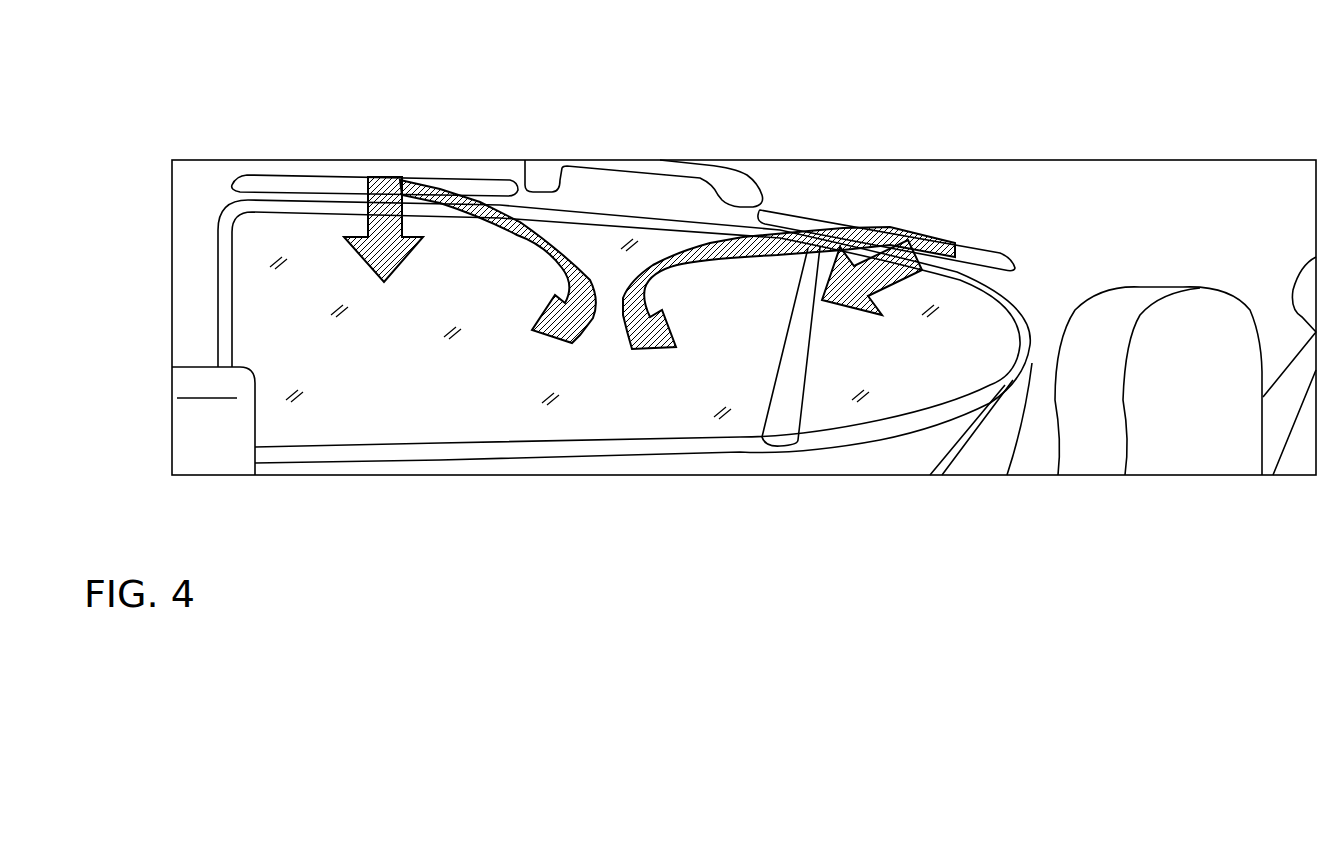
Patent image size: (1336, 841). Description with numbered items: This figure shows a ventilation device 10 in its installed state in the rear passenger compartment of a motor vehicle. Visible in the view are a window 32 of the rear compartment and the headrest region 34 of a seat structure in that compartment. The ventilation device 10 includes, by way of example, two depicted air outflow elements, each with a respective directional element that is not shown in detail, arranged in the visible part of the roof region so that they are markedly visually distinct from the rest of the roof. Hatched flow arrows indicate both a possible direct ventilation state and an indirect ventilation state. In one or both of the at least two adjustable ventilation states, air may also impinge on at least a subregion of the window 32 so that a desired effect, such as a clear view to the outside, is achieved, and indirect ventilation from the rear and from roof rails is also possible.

The ventilation device 10 is at (211, 99).
The window 32 is at (320, 422).
The headrest region 34 is at (1201, 327).